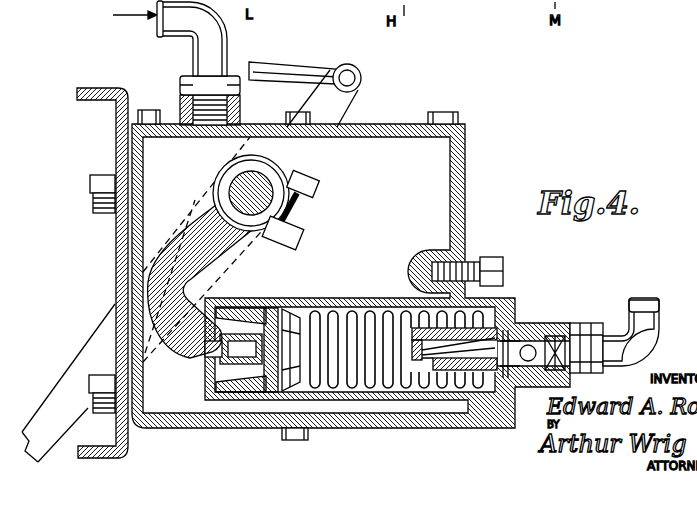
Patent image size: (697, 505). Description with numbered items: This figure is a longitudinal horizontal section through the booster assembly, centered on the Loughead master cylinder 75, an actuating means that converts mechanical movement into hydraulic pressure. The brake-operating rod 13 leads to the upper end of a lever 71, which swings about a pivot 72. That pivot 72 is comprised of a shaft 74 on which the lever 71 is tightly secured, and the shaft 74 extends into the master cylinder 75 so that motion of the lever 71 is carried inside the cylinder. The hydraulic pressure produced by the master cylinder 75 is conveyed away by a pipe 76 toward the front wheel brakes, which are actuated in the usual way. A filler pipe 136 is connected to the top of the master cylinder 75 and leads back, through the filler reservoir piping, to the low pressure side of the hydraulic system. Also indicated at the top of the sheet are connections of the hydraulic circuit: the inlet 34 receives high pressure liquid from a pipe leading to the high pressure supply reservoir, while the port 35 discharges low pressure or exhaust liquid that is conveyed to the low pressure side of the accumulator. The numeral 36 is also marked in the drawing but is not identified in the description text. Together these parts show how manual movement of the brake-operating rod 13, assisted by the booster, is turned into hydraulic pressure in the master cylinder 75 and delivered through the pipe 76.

The brake-operating rod 13 is at (290, 72).
The lever 71 is at (343, 108).
The pivot 72 is at (222, 183).
The shaft 74 is at (270, 174).
The Loughead master cylinder 75 is at (430, 178).
The pipe 76 is at (647, 313).
The filler pipe 136 is at (170, 33).
The inlet 34 is at (448, 10).
The port 35 is at (297, 2).
The element 36 is at (586, 0).